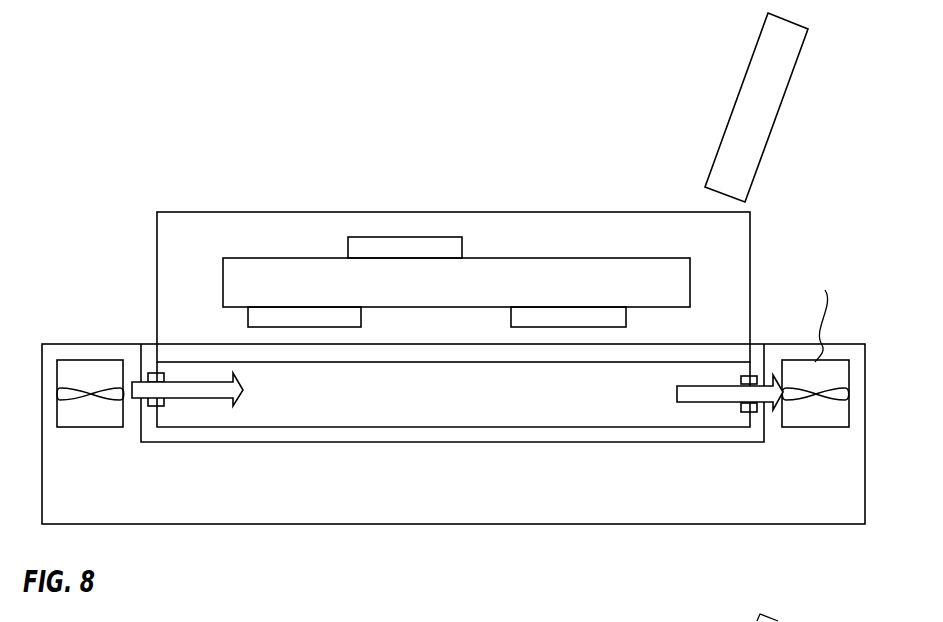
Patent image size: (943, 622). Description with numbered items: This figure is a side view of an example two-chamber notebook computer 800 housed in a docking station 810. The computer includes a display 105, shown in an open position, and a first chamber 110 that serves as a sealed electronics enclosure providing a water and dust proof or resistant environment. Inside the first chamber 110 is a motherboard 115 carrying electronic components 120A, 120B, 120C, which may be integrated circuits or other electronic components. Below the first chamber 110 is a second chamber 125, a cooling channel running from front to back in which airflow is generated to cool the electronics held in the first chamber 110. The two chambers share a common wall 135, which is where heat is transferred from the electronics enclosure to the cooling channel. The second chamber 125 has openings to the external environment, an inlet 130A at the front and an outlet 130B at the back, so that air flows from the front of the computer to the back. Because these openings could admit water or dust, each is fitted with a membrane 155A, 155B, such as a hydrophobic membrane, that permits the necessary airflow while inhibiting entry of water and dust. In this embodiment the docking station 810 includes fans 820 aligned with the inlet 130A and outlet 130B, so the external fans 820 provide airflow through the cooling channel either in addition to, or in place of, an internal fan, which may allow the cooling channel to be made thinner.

The two-chamber notebook computer 800 is at (220, 184).
The display 105 is at (736, 104).
The first chamber 110 is at (450, 212).
The motherboard 115 is at (222, 290).
The electronic component 120A is at (347, 253).
The electronic component 120B is at (362, 313).
The electronic component 120C is at (627, 313).
The second chamber 125 is at (505, 427).
The inlet 130A is at (154, 407).
The outlet 130B is at (749, 412).
The common wall 135 is at (450, 362).
The hydrophobic membrane 155A is at (164, 377).
The hydrophobic membrane 155B is at (741, 380).
The docking station 810 is at (313, 489).
The fan 820 is at (92, 362).